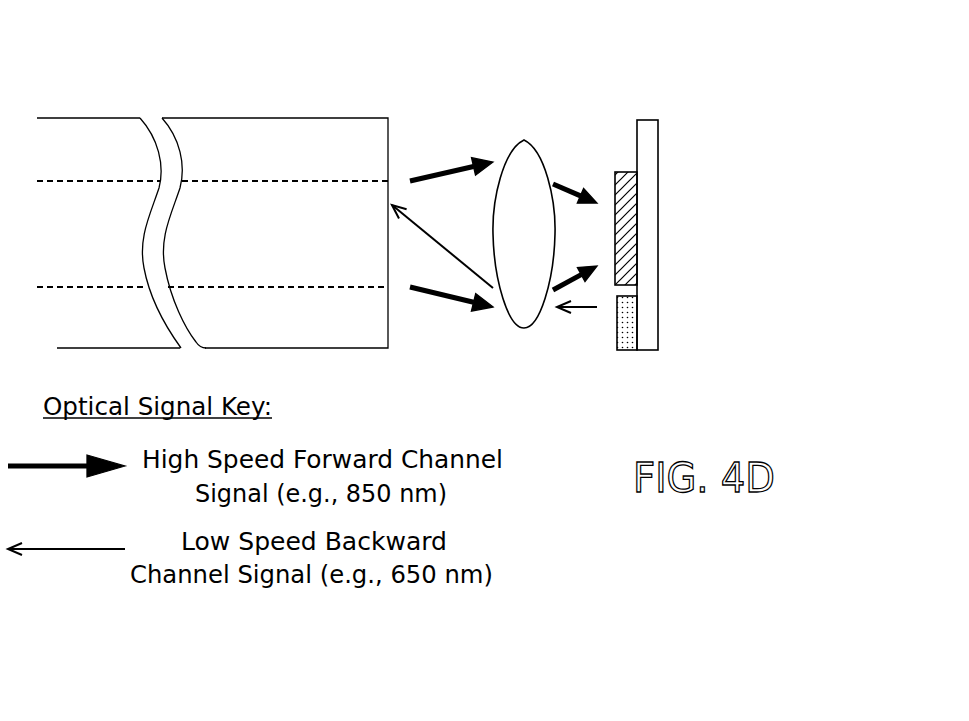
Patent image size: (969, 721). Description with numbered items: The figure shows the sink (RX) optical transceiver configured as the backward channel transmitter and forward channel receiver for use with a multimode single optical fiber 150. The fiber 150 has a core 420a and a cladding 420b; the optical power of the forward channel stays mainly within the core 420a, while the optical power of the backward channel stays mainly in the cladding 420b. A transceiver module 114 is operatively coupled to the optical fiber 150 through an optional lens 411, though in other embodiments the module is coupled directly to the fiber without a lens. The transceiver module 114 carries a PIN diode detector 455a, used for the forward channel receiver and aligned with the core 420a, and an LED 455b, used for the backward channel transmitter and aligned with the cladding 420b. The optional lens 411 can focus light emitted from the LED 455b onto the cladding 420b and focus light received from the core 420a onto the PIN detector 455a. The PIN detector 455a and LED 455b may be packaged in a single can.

The multimode single optical fiber 150 is at (247, 118).
The core 420a is at (124, 260).
The cladding 420b is at (124, 173).
The optional lens 411 is at (530, 140).
The sink (RX) optical transceiver module 114 is at (705, 187).
The PIN diode detector 455a is at (626, 229).
The LED 455b is at (627, 334).